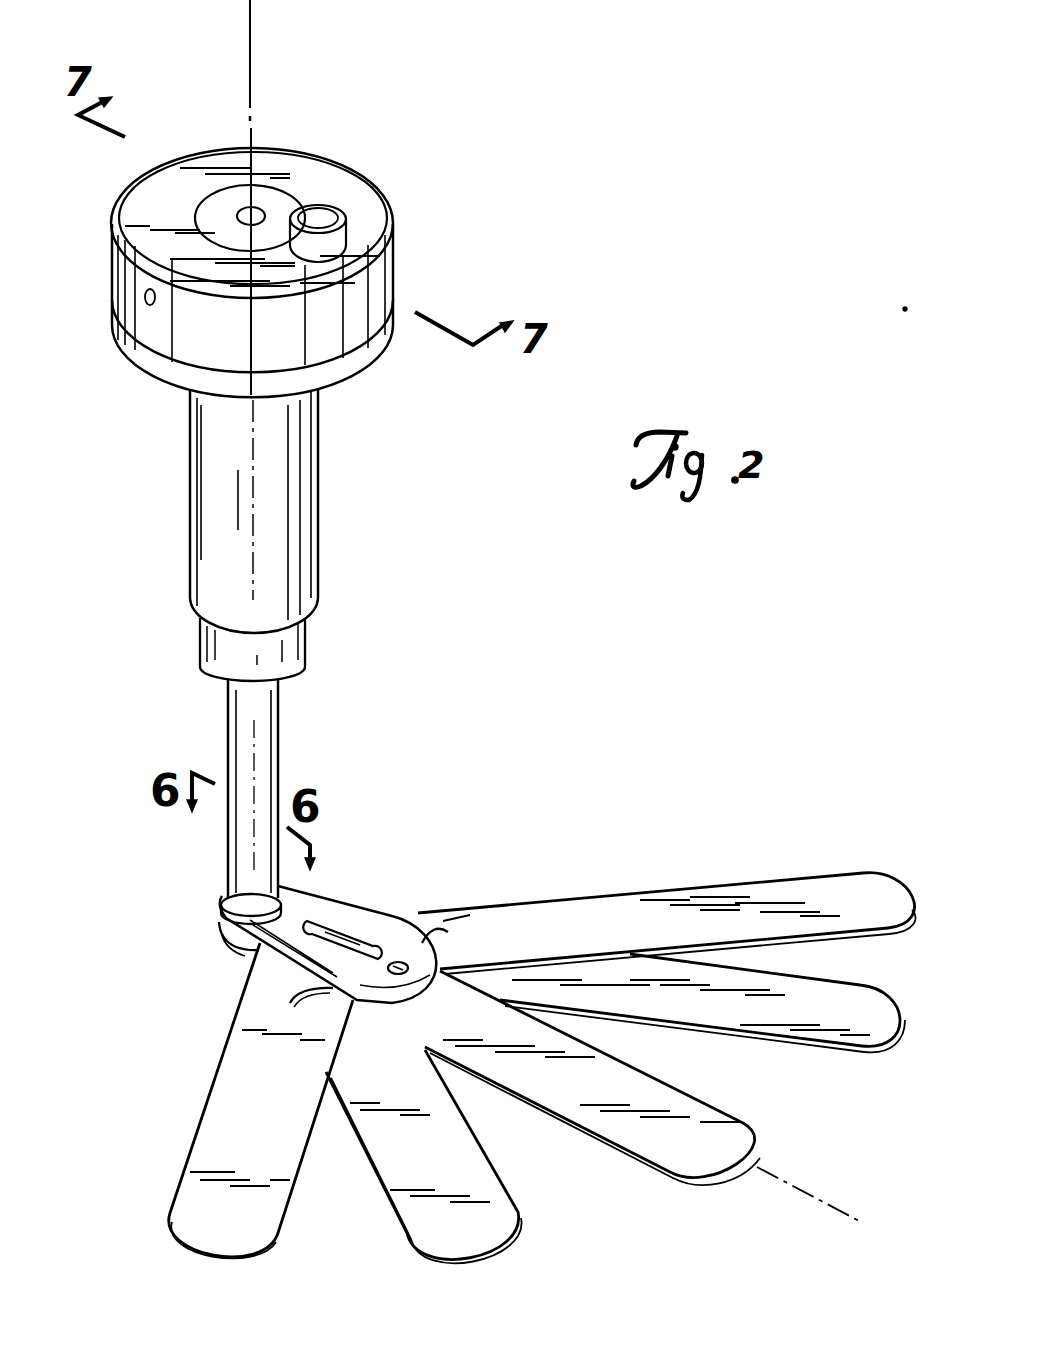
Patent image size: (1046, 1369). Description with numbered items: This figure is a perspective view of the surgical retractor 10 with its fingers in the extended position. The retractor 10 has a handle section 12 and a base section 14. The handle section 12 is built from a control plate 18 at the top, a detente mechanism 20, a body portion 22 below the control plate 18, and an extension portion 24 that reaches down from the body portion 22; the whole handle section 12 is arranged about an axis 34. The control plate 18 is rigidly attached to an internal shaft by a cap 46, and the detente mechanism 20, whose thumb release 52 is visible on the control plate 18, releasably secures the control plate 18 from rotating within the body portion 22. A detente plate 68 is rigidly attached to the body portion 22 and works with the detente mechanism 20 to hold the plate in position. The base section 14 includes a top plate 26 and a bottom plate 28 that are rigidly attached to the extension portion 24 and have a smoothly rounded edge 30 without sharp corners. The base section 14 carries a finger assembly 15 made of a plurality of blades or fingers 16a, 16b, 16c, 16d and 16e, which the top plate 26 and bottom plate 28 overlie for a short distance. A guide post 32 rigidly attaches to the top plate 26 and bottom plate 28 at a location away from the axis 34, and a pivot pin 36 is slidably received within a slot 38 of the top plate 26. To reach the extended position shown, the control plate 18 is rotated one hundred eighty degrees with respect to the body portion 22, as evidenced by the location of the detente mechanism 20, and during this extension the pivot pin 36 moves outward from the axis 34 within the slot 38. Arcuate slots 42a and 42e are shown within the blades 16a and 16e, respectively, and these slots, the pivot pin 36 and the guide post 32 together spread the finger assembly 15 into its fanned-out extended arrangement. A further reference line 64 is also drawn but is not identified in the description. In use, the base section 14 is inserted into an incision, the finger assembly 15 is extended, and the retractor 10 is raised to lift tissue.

The surgical retractor 10 is at (600, 594).
The handle section 12 is at (380, 444).
The base section 14 is at (546, 763).
The finger assembly 15 is at (742, 811).
The blade 16a is at (225, 1100).
The blade 16b is at (385, 1140).
The blade 16c is at (650, 1127).
The blade 16d is at (780, 1020).
The blade 16e is at (805, 875).
The control plate 18 is at (331, 170).
The detente mechanism 20 is at (420, 213).
The body portion 22 is at (212, 510).
The extension portion 24 is at (248, 710).
The top plate 26 is at (300, 905).
The bottom plate 28 is at (228, 945).
The rounded edge 30 is at (230, 898).
The guide post 32 is at (404, 962).
The axis 34 is at (250, 28).
The pivot pin 36 is at (400, 962).
The slot 38 is at (320, 918).
The arcuate slot 42a is at (287, 993).
The arcuate slot 42e is at (452, 912).
The cap 46 is at (231, 200).
The thumb release 52 is at (322, 243).
The pivot axis 64 is at (812, 1192).
The detente plate 68 is at (355, 357).